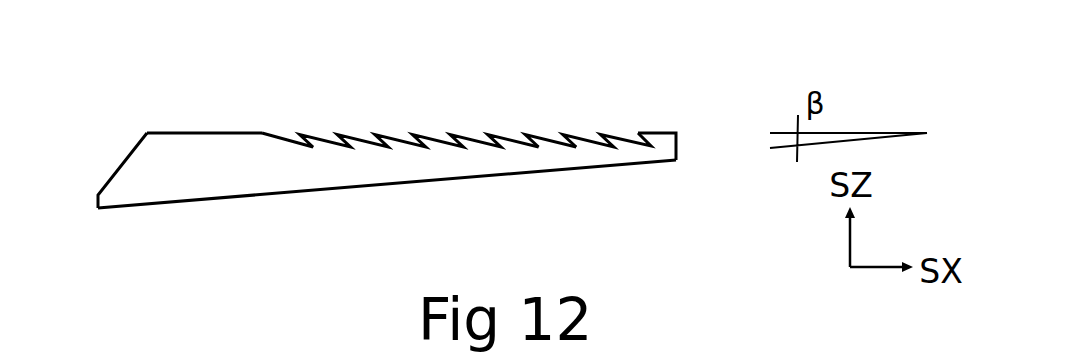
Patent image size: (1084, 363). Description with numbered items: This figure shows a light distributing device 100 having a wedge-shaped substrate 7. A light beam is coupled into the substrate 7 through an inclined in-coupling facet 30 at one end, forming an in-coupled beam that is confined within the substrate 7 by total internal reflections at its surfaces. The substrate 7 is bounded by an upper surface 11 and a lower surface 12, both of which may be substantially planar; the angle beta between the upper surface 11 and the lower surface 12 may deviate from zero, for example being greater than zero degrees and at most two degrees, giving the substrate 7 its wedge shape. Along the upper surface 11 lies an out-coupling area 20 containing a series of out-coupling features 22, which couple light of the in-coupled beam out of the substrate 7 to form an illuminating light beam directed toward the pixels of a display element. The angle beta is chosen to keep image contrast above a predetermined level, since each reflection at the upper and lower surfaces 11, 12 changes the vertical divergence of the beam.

The light distributing device 100 is at (642, 67).
The inclined in-coupling facet 30 is at (118, 163).
The upper surface 11 is at (237, 133).
The out-coupling area 20 is at (644, 125).
The out-coupling features 22 is at (542, 140).
The substrate 7 is at (676, 150).
The lower surface 12 is at (245, 196).